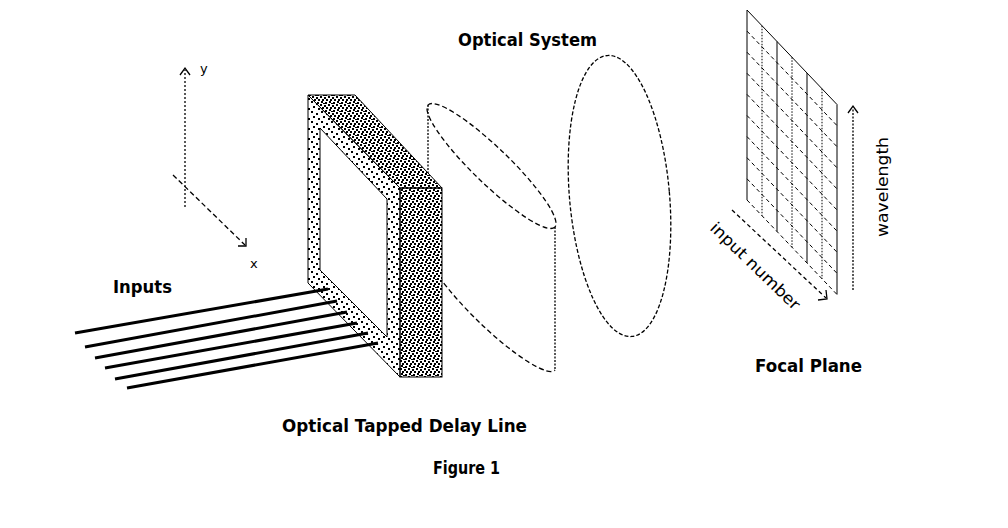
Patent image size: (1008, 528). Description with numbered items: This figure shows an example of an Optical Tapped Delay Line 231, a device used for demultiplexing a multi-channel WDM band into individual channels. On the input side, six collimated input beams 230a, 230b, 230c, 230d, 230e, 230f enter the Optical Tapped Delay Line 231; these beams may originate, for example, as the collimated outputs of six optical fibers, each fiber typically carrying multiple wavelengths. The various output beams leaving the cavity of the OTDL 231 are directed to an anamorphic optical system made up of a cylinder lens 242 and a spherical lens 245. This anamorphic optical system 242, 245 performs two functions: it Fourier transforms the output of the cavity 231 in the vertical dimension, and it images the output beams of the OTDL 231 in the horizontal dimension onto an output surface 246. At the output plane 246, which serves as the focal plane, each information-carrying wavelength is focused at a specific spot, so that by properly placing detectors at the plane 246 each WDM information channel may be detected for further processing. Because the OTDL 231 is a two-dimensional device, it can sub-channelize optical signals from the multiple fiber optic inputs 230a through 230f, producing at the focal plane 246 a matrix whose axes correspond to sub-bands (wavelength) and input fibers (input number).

The Optical Tapped Delay Line 231 is at (335, 74).
The collimated input beam 230a is at (185, 317).
The collimated input beam 230b is at (193, 329).
The collimated input beam 230c is at (204, 340).
The collimated input beam 230d is at (214, 351).
The collimated input beam 230e is at (225, 362).
The collimated input beam 230f is at (235, 372).
The cylinder lens 242 is at (492, 232).
The spherical lens 245 is at (619, 196).
The output surface 246 is at (792, 152).